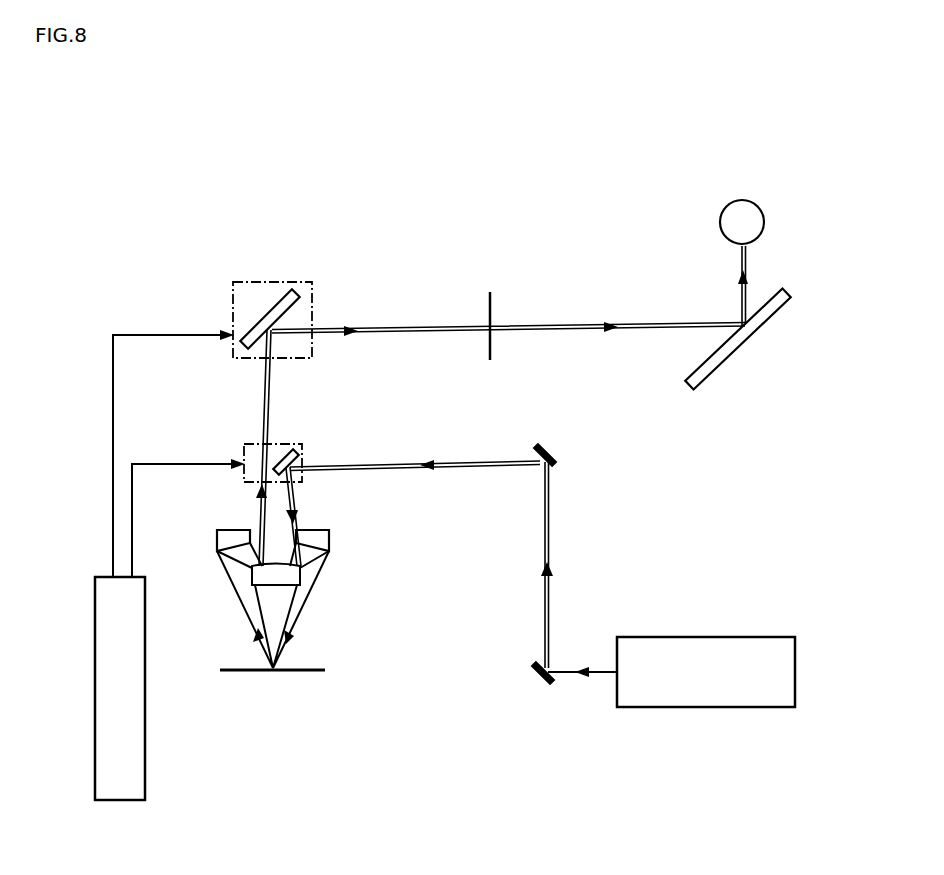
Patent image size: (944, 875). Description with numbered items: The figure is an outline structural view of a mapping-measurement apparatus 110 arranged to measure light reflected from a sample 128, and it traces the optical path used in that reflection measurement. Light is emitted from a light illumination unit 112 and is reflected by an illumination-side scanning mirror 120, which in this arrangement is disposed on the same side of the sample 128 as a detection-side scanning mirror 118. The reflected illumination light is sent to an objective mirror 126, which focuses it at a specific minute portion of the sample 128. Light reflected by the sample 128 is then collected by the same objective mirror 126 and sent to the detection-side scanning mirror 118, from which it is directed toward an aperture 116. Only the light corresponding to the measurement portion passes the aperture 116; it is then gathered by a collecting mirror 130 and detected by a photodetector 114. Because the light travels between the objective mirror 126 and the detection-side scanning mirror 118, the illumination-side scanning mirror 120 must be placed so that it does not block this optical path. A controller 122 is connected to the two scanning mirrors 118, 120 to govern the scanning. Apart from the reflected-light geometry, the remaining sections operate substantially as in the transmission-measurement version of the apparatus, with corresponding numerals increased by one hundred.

The mapping-measurement apparatus 110 is at (228, 143).
The light illumination unit 112 is at (653, 637).
The photodetector 114 is at (726, 200).
The aperture 116 is at (488, 300).
The detection-side scanning mirror 118 is at (282, 300).
The illumination-side scanning mirror 120 is at (298, 452).
The controller 122 is at (170, 565).
The objective mirror 126 is at (329, 546).
The sample 128 is at (320, 668).
The collecting mirror 130 is at (742, 401).